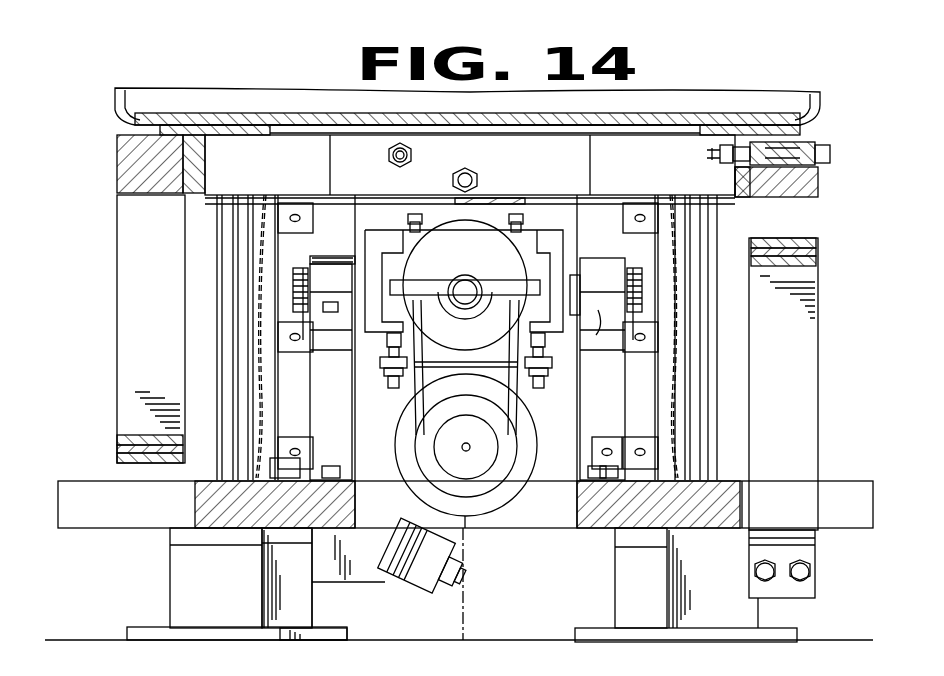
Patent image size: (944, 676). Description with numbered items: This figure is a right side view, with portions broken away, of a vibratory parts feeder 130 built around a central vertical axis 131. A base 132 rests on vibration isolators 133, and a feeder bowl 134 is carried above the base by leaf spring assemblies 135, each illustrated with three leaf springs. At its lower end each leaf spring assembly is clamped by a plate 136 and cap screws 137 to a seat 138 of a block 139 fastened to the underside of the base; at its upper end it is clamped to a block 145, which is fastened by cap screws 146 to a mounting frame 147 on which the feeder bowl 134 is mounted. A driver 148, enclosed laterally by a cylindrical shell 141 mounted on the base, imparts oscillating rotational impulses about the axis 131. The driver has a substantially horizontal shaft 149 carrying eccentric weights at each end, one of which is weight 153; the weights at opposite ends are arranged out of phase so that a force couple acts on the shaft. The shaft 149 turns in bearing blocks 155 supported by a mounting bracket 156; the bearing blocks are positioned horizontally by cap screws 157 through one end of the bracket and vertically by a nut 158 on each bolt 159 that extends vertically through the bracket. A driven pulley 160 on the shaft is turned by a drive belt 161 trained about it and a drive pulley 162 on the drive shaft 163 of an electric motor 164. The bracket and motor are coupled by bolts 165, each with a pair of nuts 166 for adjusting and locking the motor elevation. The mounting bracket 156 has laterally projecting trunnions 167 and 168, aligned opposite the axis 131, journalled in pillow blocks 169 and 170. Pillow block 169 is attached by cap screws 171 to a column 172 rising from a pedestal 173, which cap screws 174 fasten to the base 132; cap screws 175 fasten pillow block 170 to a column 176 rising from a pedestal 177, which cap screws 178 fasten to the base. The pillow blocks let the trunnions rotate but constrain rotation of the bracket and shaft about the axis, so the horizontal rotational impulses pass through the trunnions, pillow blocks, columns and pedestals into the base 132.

The vibratory parts feeder 130 is at (214, 74).
The central vertical axis 131 is at (466, 566).
The base 132 is at (72, 488).
The vibration isolators 133 is at (178, 568).
The feeder bowl 134 is at (115, 100).
The leaf spring assemblies 135 is at (117, 227).
The plate 136 is at (812, 555).
The cap screws 137 is at (800, 582).
The seat 138 is at (390, 590).
The block 139 is at (318, 556).
The cylindrical shell 141 is at (218, 306).
The block 145 is at (117, 163).
The cap screws 146 is at (832, 149).
The mounting frame 147 is at (648, 164).
The driver 148 is at (372, 222).
The shaft 149 is at (484, 280).
The eccentric weight 153 is at (512, 244).
The bearing blocks 155 is at (418, 272).
The mounting bracket 156 is at (552, 242).
The cap screws 157 is at (367, 262).
The nut 158 is at (466, 160).
The bolt 159 is at (402, 164).
The driven pulley 160 is at (488, 340).
The drive belt 161 is at (520, 410).
The drive pulley 162 is at (424, 440).
The drive shaft 163 is at (460, 448).
The electric motor 164 is at (478, 518).
The bolts 165 is at (386, 358).
The nuts 166 is at (382, 374).
The trunnion 167 is at (572, 291).
The trunnion 168 is at (353, 287).
The pillow block 169 is at (588, 280).
The pillow block 170 is at (308, 264).
The cap screws 171 is at (596, 332).
The column 172 is at (610, 412).
The pedestal 173 is at (580, 486).
The cap screws 174 is at (612, 452).
The cap screws 175 is at (326, 312).
The column 176 is at (348, 412).
The pedestal 177 is at (355, 480).
The cap screws 178 is at (330, 466).